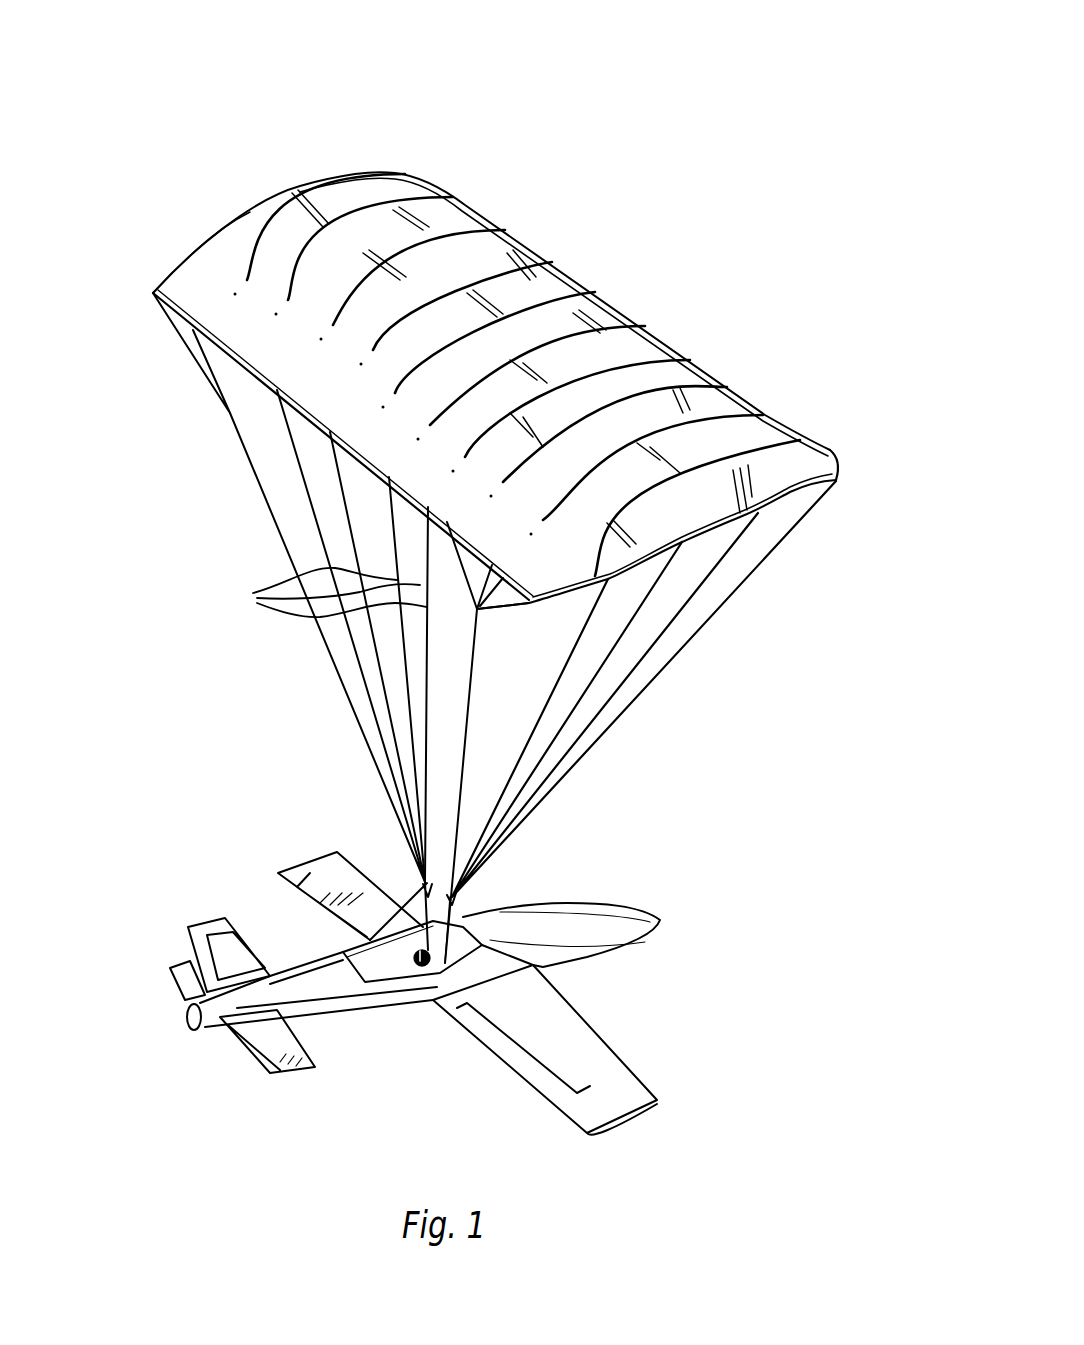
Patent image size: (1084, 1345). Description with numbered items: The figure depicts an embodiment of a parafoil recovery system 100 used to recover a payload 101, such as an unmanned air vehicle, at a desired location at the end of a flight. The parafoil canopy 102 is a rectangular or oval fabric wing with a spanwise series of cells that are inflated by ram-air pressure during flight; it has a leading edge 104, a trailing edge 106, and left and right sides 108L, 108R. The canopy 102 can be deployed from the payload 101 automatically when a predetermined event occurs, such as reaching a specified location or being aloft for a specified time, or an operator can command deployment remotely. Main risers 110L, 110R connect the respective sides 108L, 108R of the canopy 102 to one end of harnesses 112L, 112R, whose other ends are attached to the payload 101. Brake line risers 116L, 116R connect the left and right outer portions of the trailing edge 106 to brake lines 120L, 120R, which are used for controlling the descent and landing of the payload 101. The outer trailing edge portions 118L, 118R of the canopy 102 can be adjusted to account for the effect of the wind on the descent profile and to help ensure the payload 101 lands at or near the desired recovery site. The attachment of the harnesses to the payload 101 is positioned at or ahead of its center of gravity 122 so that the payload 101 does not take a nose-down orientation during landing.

The parafoil recovery system 100 is at (681, 106).
The payload 101 is at (600, 918).
The parafoil canopy 102 is at (617, 370).
The leading edge 104 is at (560, 262).
The trailing edge 106 is at (360, 458).
The left side 108L is at (240, 222).
The right side 108R is at (817, 463).
The left main riser 110L is at (310, 592).
The right main riser 110R is at (600, 613).
The left harness 112L is at (410, 877).
The right harness 112R is at (460, 893).
The left brake line riser 116L is at (333, 672).
The right brake line riser 116R is at (463, 717).
The left outer trailing edge portion 118L is at (175, 320).
The right outer trailing edge portion 118R is at (488, 608).
The left brake line 120L is at (350, 933).
The right brake line 120R is at (380, 970).
The center of gravity 122 is at (418, 968).